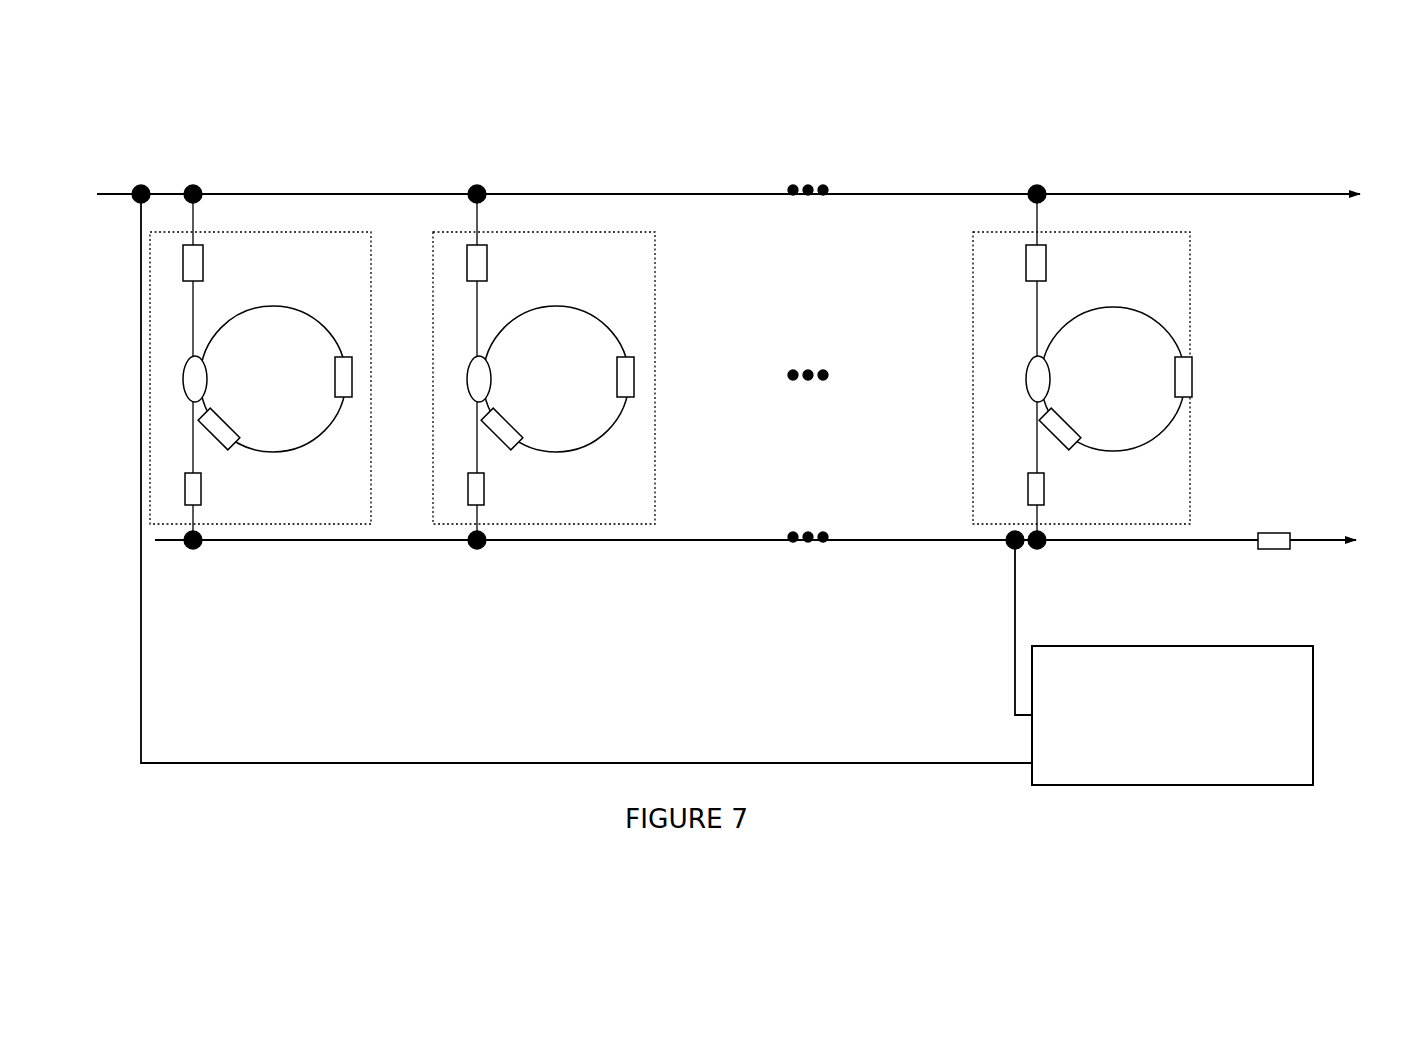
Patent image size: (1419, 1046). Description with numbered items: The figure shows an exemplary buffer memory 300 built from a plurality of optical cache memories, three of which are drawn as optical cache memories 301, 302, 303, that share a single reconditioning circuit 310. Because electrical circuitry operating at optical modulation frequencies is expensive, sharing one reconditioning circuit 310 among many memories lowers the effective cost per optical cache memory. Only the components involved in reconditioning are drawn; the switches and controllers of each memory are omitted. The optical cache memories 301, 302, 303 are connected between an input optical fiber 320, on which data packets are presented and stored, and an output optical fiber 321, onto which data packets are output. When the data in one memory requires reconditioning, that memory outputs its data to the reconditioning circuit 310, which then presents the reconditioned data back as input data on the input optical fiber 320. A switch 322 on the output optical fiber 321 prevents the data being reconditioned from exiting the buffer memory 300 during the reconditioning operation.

The buffer memory 300 is at (290, 140).
The optical cache memory 301 is at (270, 515).
The optical cache memory 302 is at (552, 497).
The optical cache memory 303 is at (1147, 505).
The reconditioning circuit 310 is at (1187, 773).
The input optical fiber 320 is at (693, 193).
The output optical fiber 321 is at (698, 538).
The switch 322 is at (1263, 535).